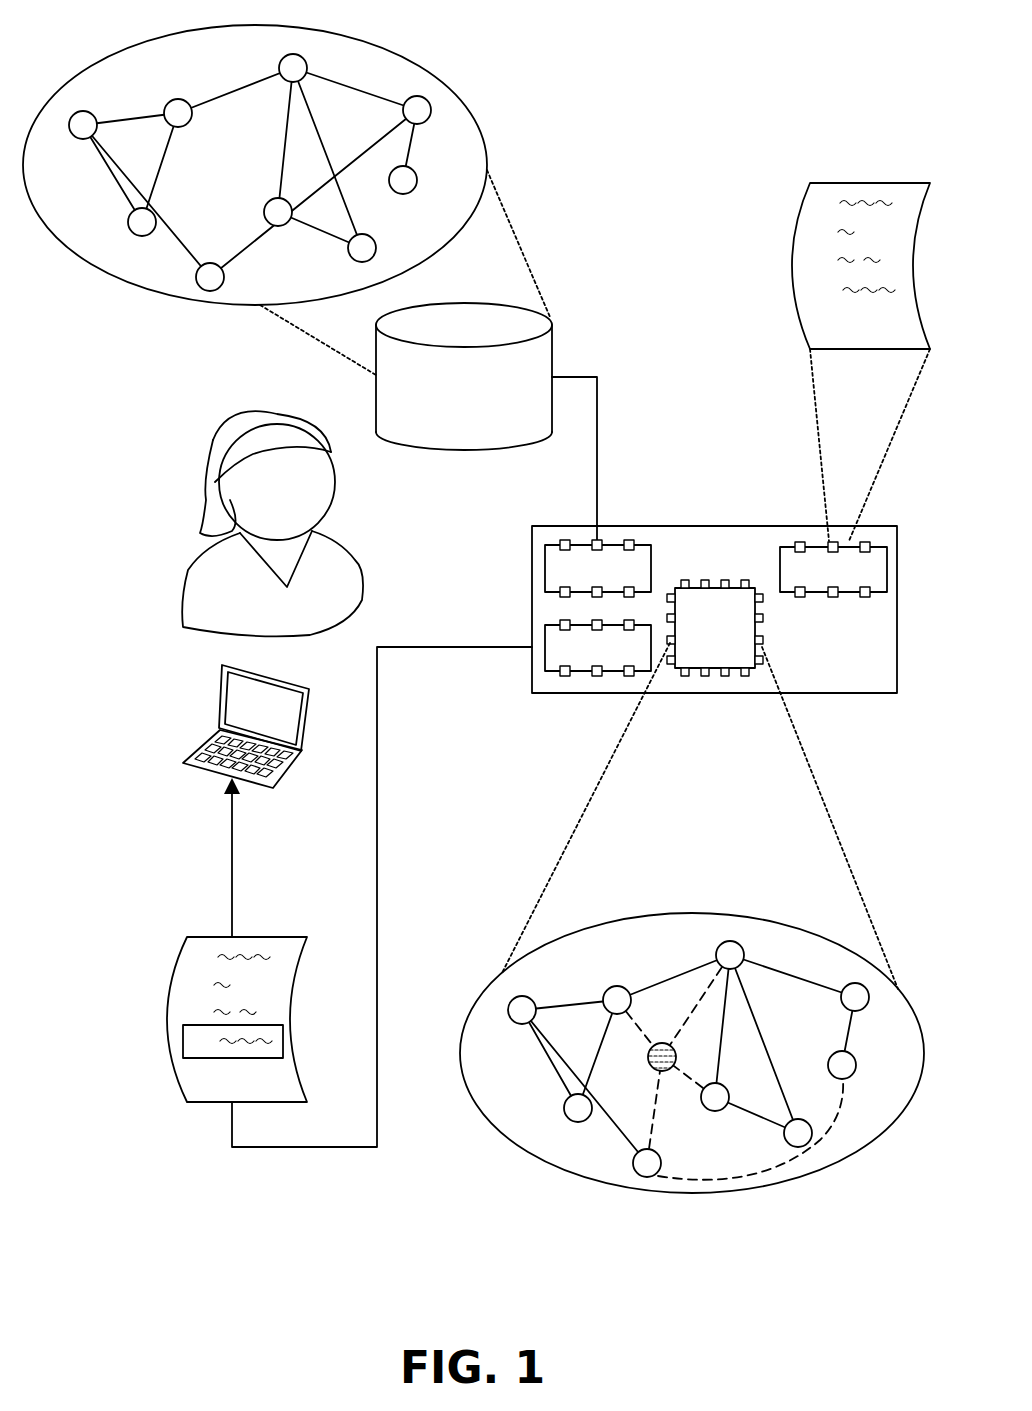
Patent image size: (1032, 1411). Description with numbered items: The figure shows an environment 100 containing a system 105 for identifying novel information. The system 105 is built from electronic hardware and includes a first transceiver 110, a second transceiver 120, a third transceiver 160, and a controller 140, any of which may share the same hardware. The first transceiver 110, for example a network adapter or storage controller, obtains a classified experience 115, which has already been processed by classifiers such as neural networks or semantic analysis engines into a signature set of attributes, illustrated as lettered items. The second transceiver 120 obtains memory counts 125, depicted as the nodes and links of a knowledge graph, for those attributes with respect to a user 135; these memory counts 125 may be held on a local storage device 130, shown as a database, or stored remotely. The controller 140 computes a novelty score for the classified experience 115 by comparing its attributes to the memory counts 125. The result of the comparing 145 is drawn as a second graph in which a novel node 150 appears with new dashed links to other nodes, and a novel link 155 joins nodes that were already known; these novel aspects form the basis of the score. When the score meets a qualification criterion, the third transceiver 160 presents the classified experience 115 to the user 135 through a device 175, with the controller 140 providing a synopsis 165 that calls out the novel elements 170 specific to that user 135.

The environment 100 is at (786, 21).
The system 105 is at (680, 526).
The first transceiver 110 is at (800, 541).
The classified experience 115 is at (810, 183).
The second transceiver 120 is at (545, 568).
The memory counts 125 is at (120, 52).
The local storage device 130 is at (376, 398).
The user 135 is at (212, 447).
The controller 140 is at (763, 618).
The result of the comparing 145 is at (692, 1058).
The novel node 150 is at (648, 1057).
The novel link 155 is at (775, 1175).
The third transceiver 160 is at (545, 626).
The synopsis 165 is at (187, 937).
The novel elements 170 is at (183, 1042).
The device 175 is at (183, 763).